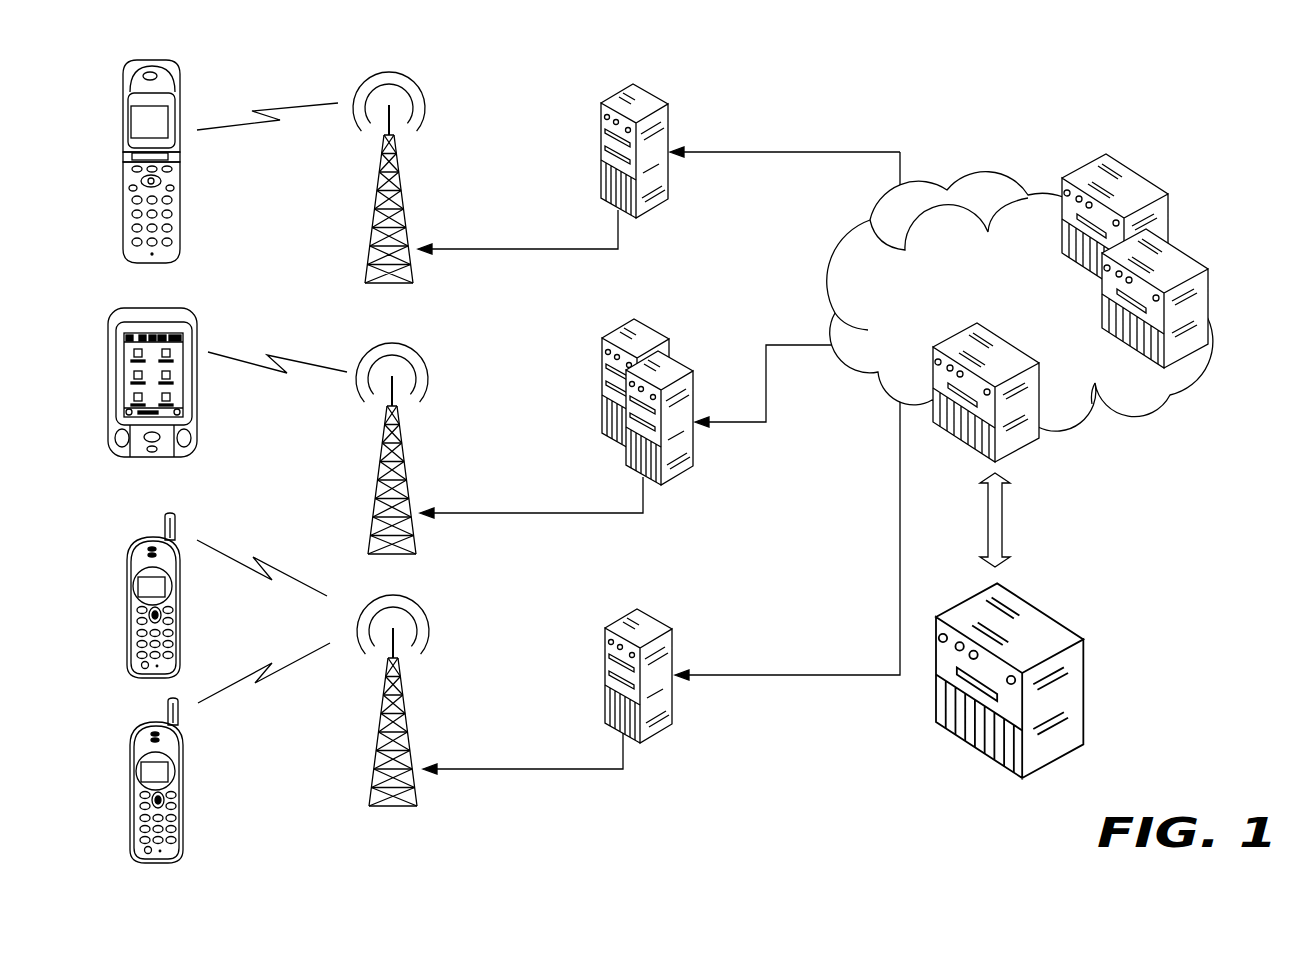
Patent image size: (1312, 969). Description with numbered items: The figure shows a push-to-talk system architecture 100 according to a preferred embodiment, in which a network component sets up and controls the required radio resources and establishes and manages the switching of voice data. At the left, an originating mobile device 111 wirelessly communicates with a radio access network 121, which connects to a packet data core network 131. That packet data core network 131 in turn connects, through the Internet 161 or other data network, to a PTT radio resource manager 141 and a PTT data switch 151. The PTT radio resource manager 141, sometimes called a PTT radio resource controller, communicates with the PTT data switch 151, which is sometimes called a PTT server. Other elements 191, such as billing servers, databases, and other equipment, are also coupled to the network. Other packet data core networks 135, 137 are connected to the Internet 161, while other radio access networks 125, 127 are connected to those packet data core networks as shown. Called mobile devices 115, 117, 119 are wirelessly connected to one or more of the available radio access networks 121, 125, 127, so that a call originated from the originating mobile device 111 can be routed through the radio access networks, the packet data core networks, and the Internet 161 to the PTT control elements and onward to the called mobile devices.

The push-to-talk system architecture 100 is at (1211, 711).
The originating mobile device 111 is at (128, 250).
The called mobile device 115 is at (113, 445).
The called mobile device 117 is at (129, 664).
The called mobile device 119 is at (131, 848).
The radio access network 121 is at (372, 222).
The radio access network 125 is at (375, 491).
The radio access network 127 is at (377, 745).
The packet data core network 131 is at (617, 94).
The packet data core network 135 is at (620, 327).
The packet data core network 137 is at (623, 618).
The PTT radio resource manager 141 is at (1040, 607).
The PTT data switch 151 is at (1021, 350).
The Internet 161 is at (856, 230).
The other elements 191 is at (1185, 246).